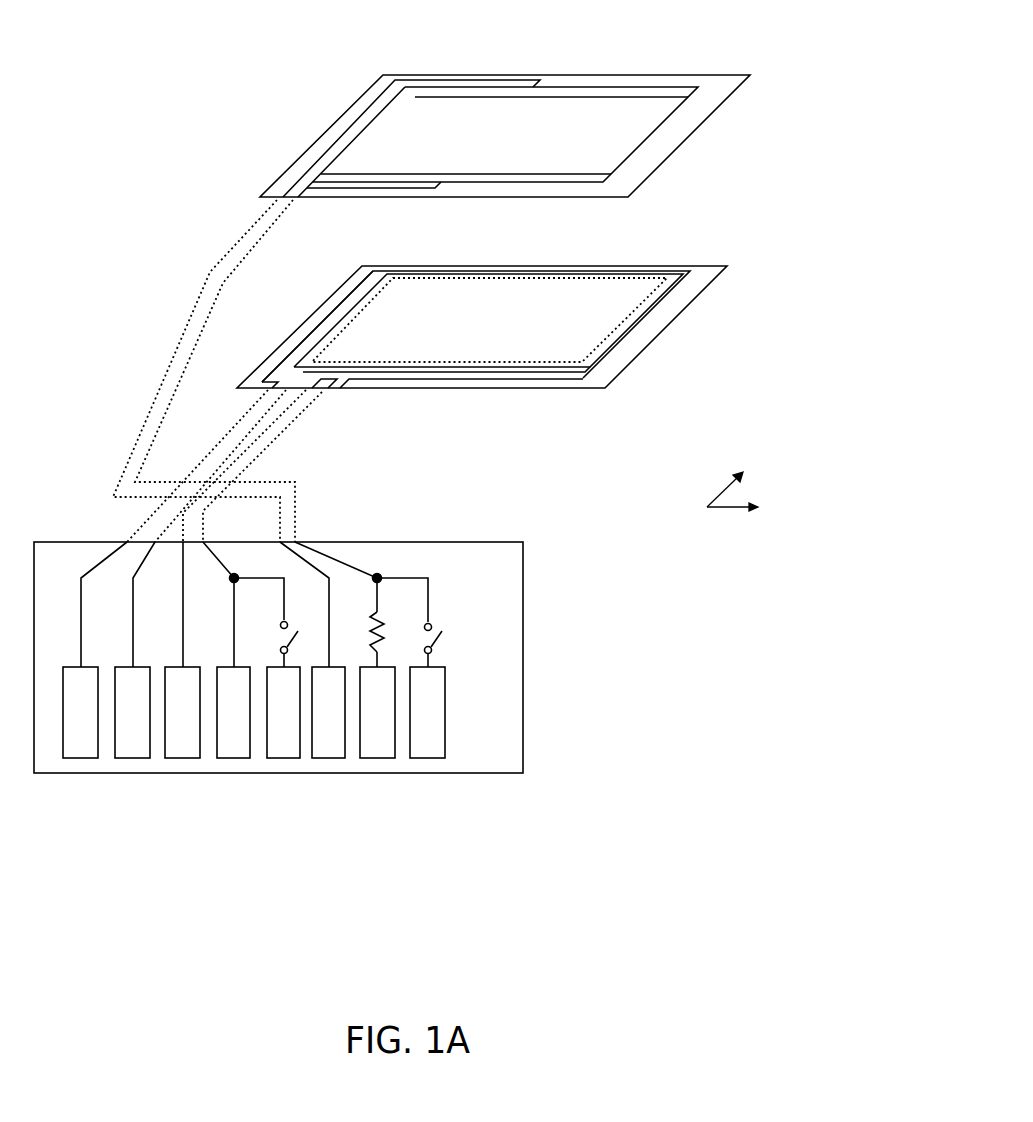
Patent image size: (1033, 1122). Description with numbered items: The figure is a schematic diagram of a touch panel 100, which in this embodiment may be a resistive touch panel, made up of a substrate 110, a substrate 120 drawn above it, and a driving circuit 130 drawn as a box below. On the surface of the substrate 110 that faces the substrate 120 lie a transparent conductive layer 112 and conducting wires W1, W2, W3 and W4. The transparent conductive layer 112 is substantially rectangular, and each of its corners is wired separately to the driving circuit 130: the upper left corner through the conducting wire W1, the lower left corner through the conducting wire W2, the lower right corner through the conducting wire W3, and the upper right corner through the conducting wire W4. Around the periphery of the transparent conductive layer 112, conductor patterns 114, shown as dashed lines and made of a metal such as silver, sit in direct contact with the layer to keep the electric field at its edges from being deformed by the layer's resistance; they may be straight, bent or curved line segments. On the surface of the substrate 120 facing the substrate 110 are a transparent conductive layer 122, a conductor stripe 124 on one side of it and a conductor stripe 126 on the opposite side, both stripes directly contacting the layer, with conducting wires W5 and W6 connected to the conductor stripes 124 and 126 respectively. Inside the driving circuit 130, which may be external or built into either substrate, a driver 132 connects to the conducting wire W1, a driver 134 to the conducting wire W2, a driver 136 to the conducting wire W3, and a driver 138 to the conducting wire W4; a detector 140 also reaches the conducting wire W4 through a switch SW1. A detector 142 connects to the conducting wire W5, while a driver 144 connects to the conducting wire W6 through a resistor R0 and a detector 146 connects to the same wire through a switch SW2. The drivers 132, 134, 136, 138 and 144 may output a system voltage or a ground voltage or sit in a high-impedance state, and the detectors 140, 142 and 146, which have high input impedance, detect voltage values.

The touch panel 100 is at (416, 453).
The substrate 110 is at (487, 322).
The transparent conductive layer 112 is at (640, 271).
The conductor patterns 114 is at (580, 278).
The substrate 120 is at (529, 130).
The transparent conductive layer 122 is at (655, 133).
The conductor stripe 124 is at (687, 95).
The conductor stripe 126 is at (607, 182).
The driving circuit 130 is at (313, 680).
The driver 132 is at (81, 758).
The driver 134 is at (133, 758).
The driver 136 is at (183, 758).
The driver 138 is at (233, 758).
The detector 140 is at (283, 758).
The detector 142 is at (328, 758).
The driver 144 is at (377, 758).
The detector 146 is at (428, 758).
The conducting wire W1 is at (330, 313).
The conducting wire W2 is at (290, 377).
The conducting wire W3 is at (327, 378).
The conducting wire W4 is at (352, 384).
The conducting wire W5 is at (343, 132).
The conducting wire W6 is at (385, 190).
The switch SW1 is at (266, 622).
The switch SW2 is at (430, 622).
The resistor R0 is at (393, 632).